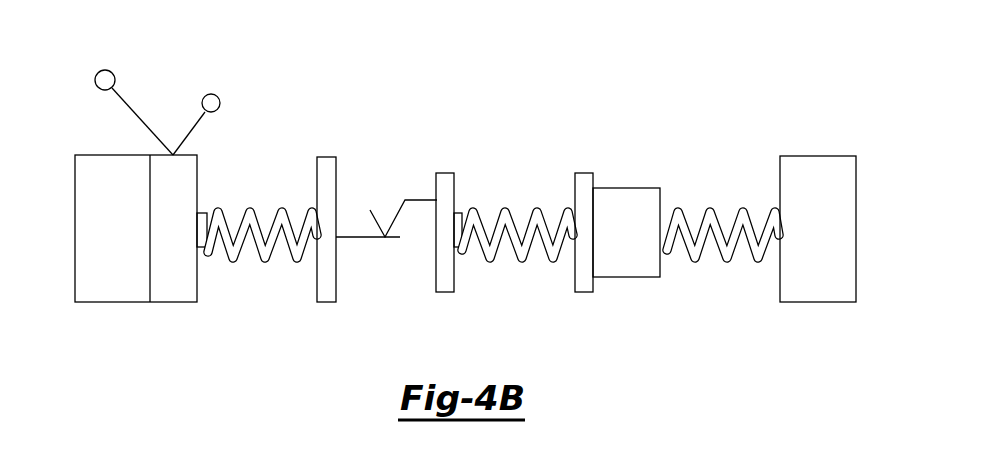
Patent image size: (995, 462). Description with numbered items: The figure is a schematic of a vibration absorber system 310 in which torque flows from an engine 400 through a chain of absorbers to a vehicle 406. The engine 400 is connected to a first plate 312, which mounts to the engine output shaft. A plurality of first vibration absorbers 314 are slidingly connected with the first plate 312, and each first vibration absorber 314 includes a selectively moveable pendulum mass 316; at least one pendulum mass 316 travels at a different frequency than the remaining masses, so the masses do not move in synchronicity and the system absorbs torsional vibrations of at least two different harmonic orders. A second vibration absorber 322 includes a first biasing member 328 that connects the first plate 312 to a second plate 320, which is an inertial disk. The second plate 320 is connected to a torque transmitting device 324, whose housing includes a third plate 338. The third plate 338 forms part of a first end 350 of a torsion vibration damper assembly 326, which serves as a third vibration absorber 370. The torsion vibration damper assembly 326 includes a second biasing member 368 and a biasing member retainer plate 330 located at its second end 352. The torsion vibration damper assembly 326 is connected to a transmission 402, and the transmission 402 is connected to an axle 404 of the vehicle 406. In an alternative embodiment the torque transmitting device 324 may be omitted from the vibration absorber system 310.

The vibration absorber system 310 is at (636, 118).
The first plate 312 is at (172, 303).
The first vibration absorbers 314 is at (128, 107).
The pendulum mass 316 is at (95, 79).
The second plate 320 is at (317, 277).
The second vibration absorber 322 is at (264, 163).
The torque transmitting device 324 is at (373, 168).
The torsion vibration damper assembly 326 is at (526, 183).
The first biasing member 328 is at (253, 262).
The biasing member retainer plate 330 is at (575, 276).
The third plate 338 is at (437, 276).
The first end 350 is at (453, 160).
The second end 352 is at (596, 302).
The second biasing member 368 is at (508, 256).
The third vibration absorber 370 is at (558, 173).
The engine 400 is at (68, 200).
The transmission 402 is at (637, 188).
The axle 404 is at (726, 210).
The vehicle 406 is at (818, 156).